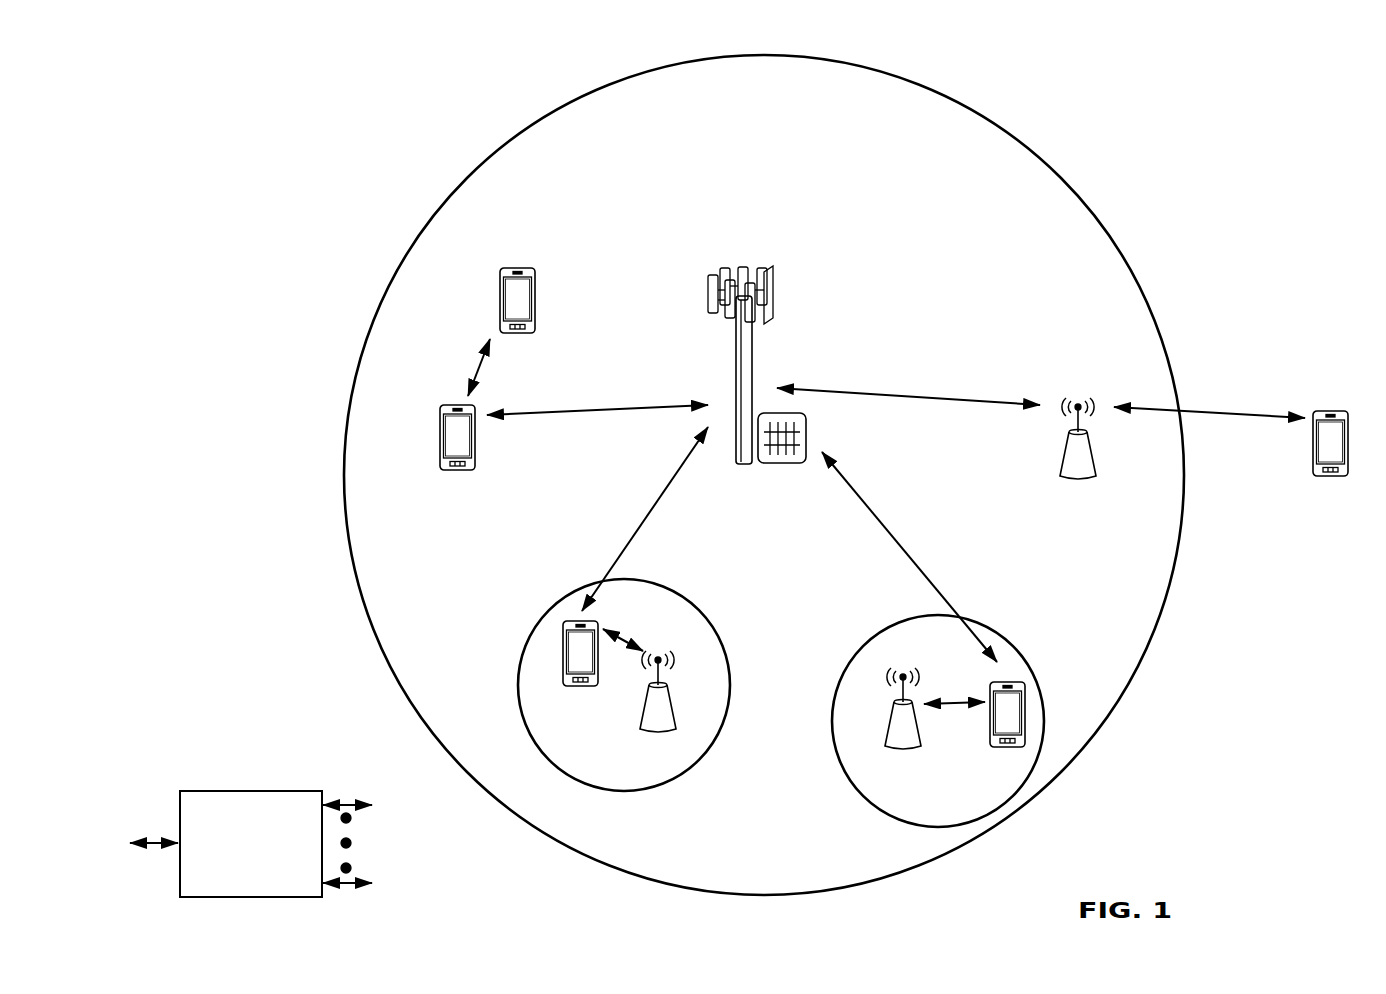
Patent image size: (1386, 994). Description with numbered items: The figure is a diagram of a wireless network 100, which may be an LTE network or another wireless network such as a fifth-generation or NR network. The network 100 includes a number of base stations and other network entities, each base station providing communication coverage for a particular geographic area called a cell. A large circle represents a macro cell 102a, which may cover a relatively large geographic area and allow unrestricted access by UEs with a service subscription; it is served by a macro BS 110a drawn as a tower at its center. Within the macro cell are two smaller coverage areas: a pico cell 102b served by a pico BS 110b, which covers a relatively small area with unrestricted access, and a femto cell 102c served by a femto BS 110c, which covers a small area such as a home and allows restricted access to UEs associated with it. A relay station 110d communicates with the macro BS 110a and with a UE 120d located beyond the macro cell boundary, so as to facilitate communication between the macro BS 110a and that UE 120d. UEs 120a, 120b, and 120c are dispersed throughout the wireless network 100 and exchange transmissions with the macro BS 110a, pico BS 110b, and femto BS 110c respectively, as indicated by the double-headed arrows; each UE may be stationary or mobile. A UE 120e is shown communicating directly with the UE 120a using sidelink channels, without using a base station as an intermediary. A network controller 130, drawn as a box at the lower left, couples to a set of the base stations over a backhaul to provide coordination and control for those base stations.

The wireless network 100 is at (232, 50).
The macro cell 102a is at (1043, 162).
The pico cell 102b is at (719, 624).
The femto cell 102c is at (866, 634).
The macro BS 110a is at (750, 262).
The pico BS 110b is at (680, 716).
The femto BS 110c is at (886, 727).
The relay station 110d is at (1079, 396).
The UE 120a is at (440, 436).
The UE 120b is at (566, 687).
The UE 120c is at (991, 749).
The UE 120d is at (1345, 410).
The UE 120e is at (500, 292).
The network controller 130 is at (248, 790).